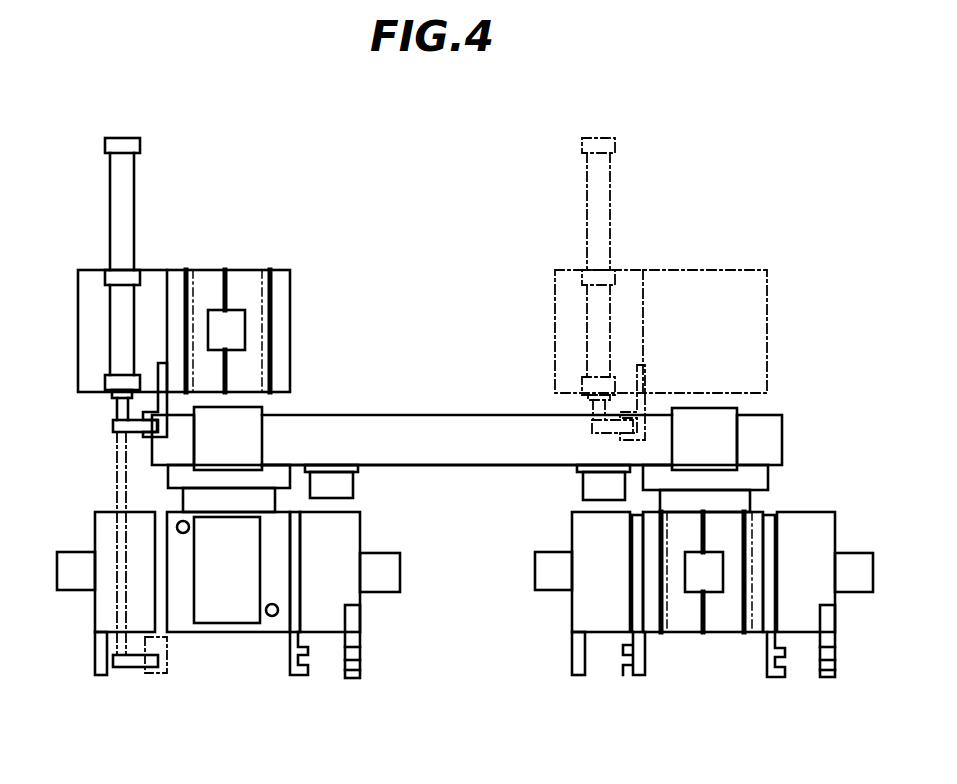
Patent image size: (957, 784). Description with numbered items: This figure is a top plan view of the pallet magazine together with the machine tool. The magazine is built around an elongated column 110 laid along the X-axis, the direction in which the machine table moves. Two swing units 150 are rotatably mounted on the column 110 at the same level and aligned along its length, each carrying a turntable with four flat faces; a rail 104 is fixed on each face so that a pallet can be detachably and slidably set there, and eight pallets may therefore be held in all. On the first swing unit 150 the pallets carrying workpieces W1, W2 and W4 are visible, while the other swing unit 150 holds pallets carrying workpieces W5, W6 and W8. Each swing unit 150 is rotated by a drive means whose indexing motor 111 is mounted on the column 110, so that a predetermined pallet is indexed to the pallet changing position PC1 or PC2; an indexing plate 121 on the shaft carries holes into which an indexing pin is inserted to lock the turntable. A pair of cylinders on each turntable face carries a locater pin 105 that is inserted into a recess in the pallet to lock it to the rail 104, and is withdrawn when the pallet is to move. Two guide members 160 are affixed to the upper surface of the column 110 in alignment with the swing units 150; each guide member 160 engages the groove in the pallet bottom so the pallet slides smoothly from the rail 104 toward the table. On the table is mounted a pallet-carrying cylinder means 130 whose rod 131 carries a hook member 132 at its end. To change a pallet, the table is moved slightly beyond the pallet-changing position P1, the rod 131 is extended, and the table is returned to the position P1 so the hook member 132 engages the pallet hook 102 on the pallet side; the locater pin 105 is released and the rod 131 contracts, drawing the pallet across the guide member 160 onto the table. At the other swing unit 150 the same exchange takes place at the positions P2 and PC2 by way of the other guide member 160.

The pallet hook 102 is at (148, 674).
The rail 104 is at (207, 616).
The locater pin 105 is at (272, 617).
The column 110 is at (414, 430).
The indexing motor 111 is at (345, 485).
The indexing plate 121 is at (760, 482).
The pallet-carrying cylinder means 130 is at (125, 197).
The rod 131 is at (115, 470).
The hook member 132 is at (128, 668).
The swing unit 150 is at (372, 612).
The guide member 160 is at (265, 408).
The pallet-changing position P1 is at (215, 260).
The pallet changing position P2 is at (697, 260).
The pallet changing position PC1 is at (228, 643).
The pallet changing position PC2 is at (708, 642).
The workpiece W1 is at (238, 317).
The workpiece W2 is at (73, 560).
The workpiece W4 is at (383, 565).
The workpiece W5 is at (693, 593).
The workpiece W6 is at (545, 560).
The workpiece W8 is at (858, 558).